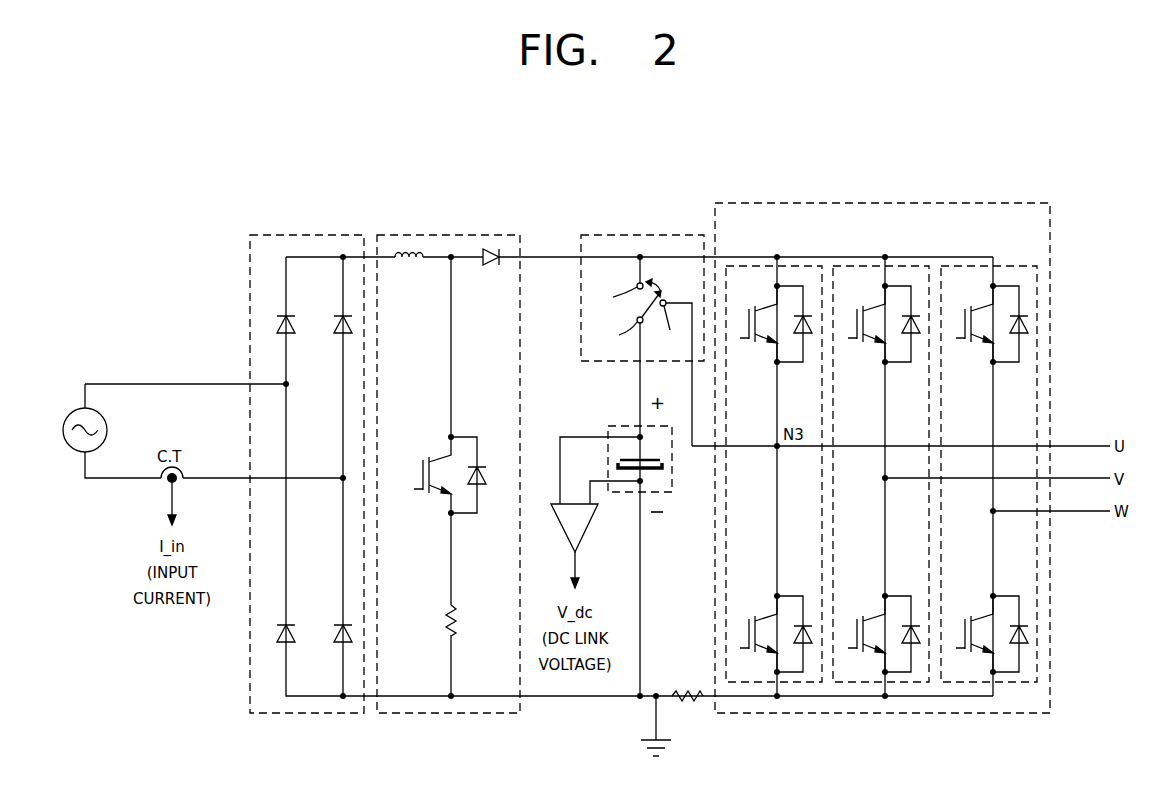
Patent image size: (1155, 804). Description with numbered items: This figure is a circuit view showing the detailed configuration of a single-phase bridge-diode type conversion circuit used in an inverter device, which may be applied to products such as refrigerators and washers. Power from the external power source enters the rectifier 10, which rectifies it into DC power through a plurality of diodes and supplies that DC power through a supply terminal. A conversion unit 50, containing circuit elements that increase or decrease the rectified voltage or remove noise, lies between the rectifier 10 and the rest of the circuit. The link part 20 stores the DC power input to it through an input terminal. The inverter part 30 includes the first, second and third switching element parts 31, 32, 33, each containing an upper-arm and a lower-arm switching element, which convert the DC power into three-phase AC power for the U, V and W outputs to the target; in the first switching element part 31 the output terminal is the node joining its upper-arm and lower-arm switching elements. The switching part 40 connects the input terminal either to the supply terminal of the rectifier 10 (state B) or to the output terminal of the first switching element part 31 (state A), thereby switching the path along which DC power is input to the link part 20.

The rectifier 10 is at (307, 235).
The link part 20 is at (620, 426).
The inverter part 30 is at (883, 203).
The first switching element part 31 is at (799, 266).
The second switching element part 32 is at (909, 266).
The third switching element part 33 is at (1015, 266).
The switching part 40 is at (644, 235).
The conversion unit 50 is at (450, 235).